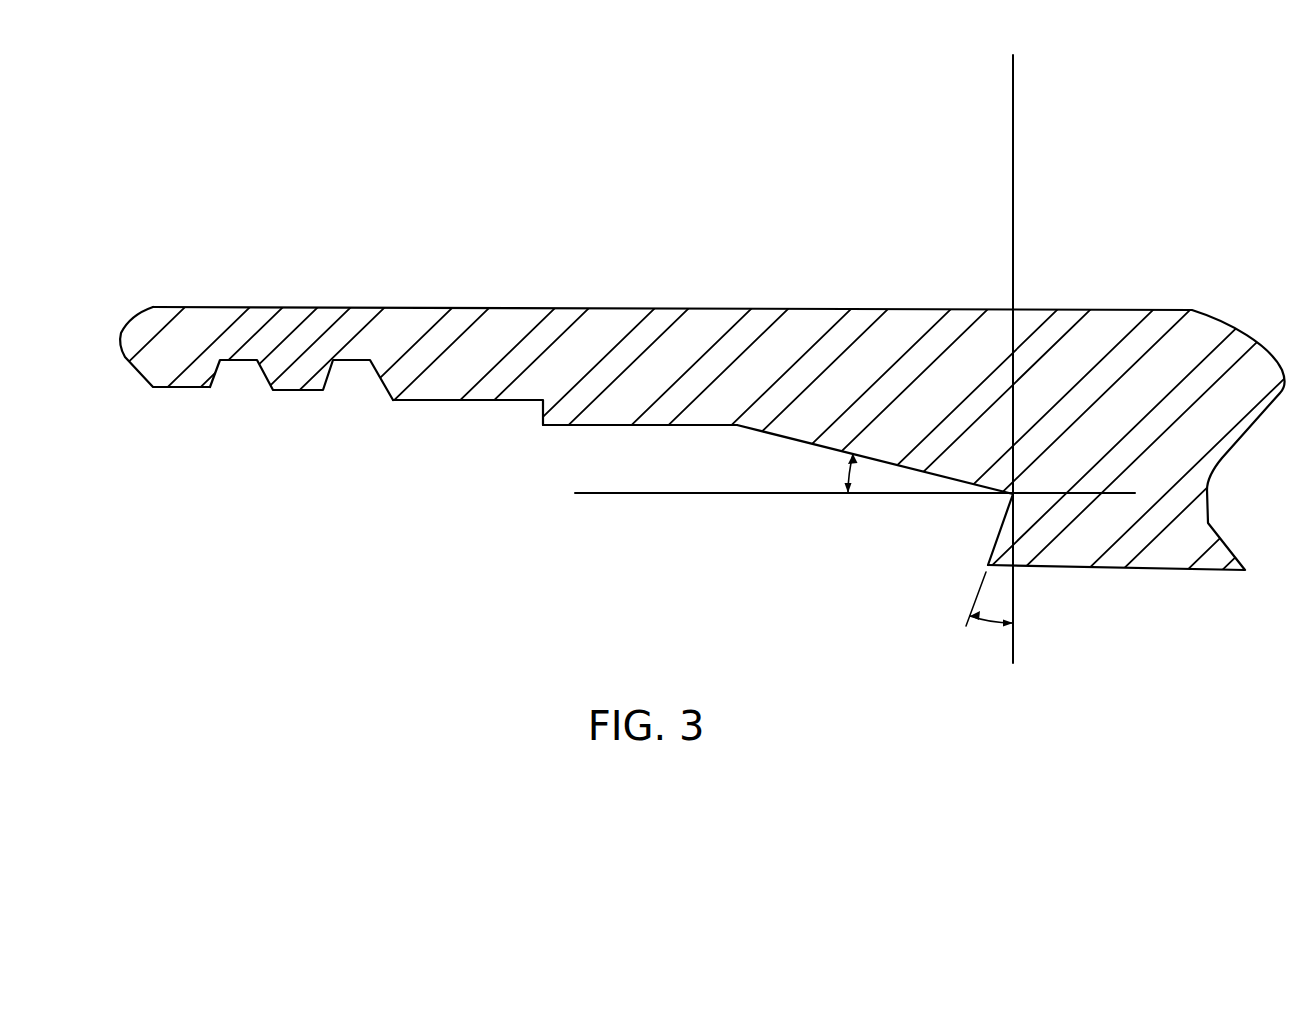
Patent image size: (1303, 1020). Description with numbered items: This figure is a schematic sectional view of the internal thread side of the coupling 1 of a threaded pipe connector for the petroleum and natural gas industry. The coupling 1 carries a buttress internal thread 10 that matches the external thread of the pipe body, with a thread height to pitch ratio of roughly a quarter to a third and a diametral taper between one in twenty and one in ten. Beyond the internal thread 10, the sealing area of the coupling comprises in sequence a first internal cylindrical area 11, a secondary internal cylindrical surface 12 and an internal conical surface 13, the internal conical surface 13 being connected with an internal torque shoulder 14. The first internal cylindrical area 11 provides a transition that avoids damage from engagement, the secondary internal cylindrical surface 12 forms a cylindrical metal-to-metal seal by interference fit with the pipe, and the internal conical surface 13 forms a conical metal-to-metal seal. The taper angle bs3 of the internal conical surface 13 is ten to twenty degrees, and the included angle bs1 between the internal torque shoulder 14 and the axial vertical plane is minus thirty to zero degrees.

The coupling 1 is at (400, 322).
The internal thread 10 is at (248, 390).
The first internal cylindrical area 11 is at (455, 401).
The secondary internal cylindrical surface 12 is at (637, 427).
The internal conical surface 13 is at (870, 400).
The internal torque shoulder 14 is at (1000, 527).
The taper angle of internal conical surface bs3 is at (821, 473).
The included angle of internal torque shoulder bs1 is at (986, 637).